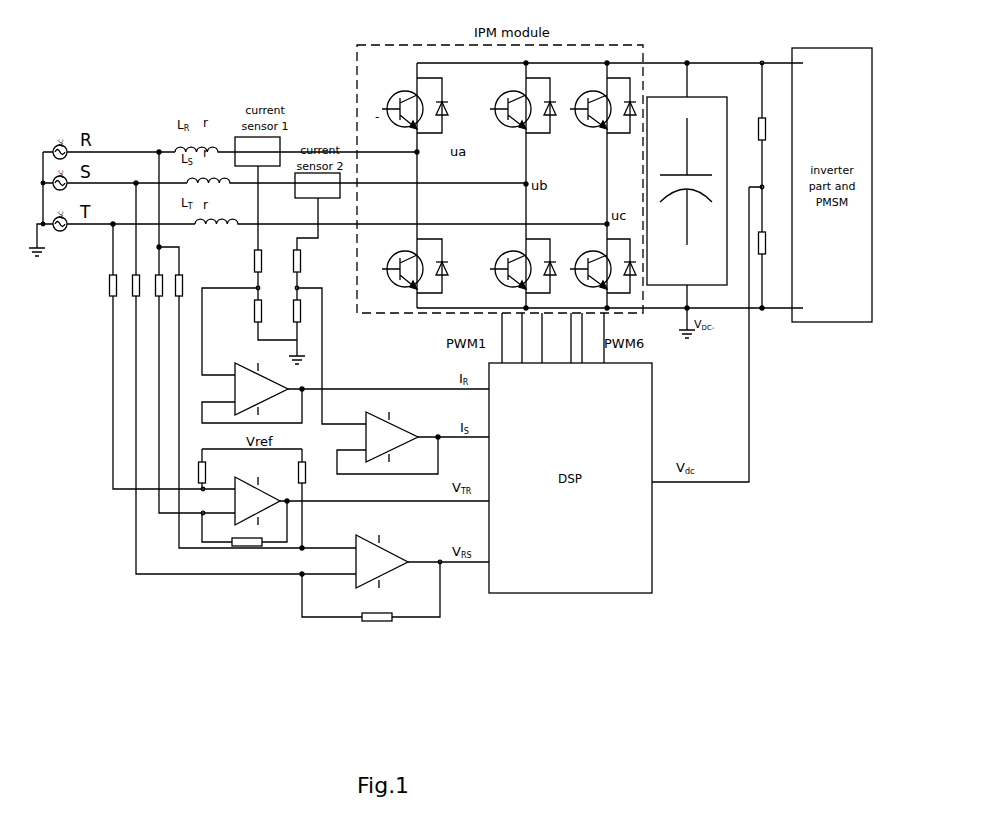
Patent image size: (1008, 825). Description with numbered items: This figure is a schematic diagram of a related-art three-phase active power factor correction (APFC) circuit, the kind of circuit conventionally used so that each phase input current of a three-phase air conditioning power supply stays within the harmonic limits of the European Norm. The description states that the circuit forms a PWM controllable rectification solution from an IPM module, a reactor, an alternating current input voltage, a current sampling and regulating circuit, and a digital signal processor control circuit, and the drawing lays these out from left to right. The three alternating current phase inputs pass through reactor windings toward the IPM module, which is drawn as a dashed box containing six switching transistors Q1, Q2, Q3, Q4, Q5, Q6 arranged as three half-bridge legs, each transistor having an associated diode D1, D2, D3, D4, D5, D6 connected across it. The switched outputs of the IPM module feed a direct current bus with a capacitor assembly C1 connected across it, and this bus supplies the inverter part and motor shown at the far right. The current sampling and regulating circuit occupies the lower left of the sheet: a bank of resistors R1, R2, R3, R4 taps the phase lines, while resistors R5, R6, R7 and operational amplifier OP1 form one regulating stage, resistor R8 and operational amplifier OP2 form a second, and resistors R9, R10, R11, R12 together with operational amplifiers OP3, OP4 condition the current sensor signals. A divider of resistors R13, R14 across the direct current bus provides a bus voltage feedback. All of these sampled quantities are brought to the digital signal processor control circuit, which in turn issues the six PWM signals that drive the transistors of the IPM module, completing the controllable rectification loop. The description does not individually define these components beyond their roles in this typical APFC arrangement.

The resistor R1 is at (104, 282).
The resistor R2 is at (129, 282).
The resistor R3 is at (150, 281).
The resistor R4 is at (188, 282).
The resistor R5 is at (213, 472).
The resistor R6 is at (291, 472).
The resistor R7 is at (247, 554).
The resistor R8 is at (377, 627).
The resistor R9 is at (248, 261).
The resistor R10 is at (244, 311).
The resistor R11 is at (311, 261).
The resistor R12 is at (284, 311).
The resistor R13 is at (750, 129).
The resistor R14 is at (750, 243).
The IGBT transistor Q1 is at (402, 105).
The IGBT transistor Q2 is at (402, 265).
The IGBT transistor Q3 is at (510, 105).
The IGBT transistor Q4 is at (510, 264).
The IGBT transistor Q5 is at (590, 105).
The IGBT transistor Q6 is at (590, 265).
The freewheeling diode D1 is at (442, 105).
The freewheeling diode D2 is at (442, 266).
The freewheeling diode D3 is at (548, 105).
The freewheeling diode D4 is at (548, 264).
The freewheeling diode D5 is at (628, 105).
The freewheeling diode D6 is at (622, 264).
The capacitor assembly C1 is at (687, 185).
The operational amplifier OP1 is at (257, 501).
The operational amplifier OP2 is at (391, 561).
The operational amplifier OP3 is at (258, 380).
The operational amplifier OP4 is at (396, 437).